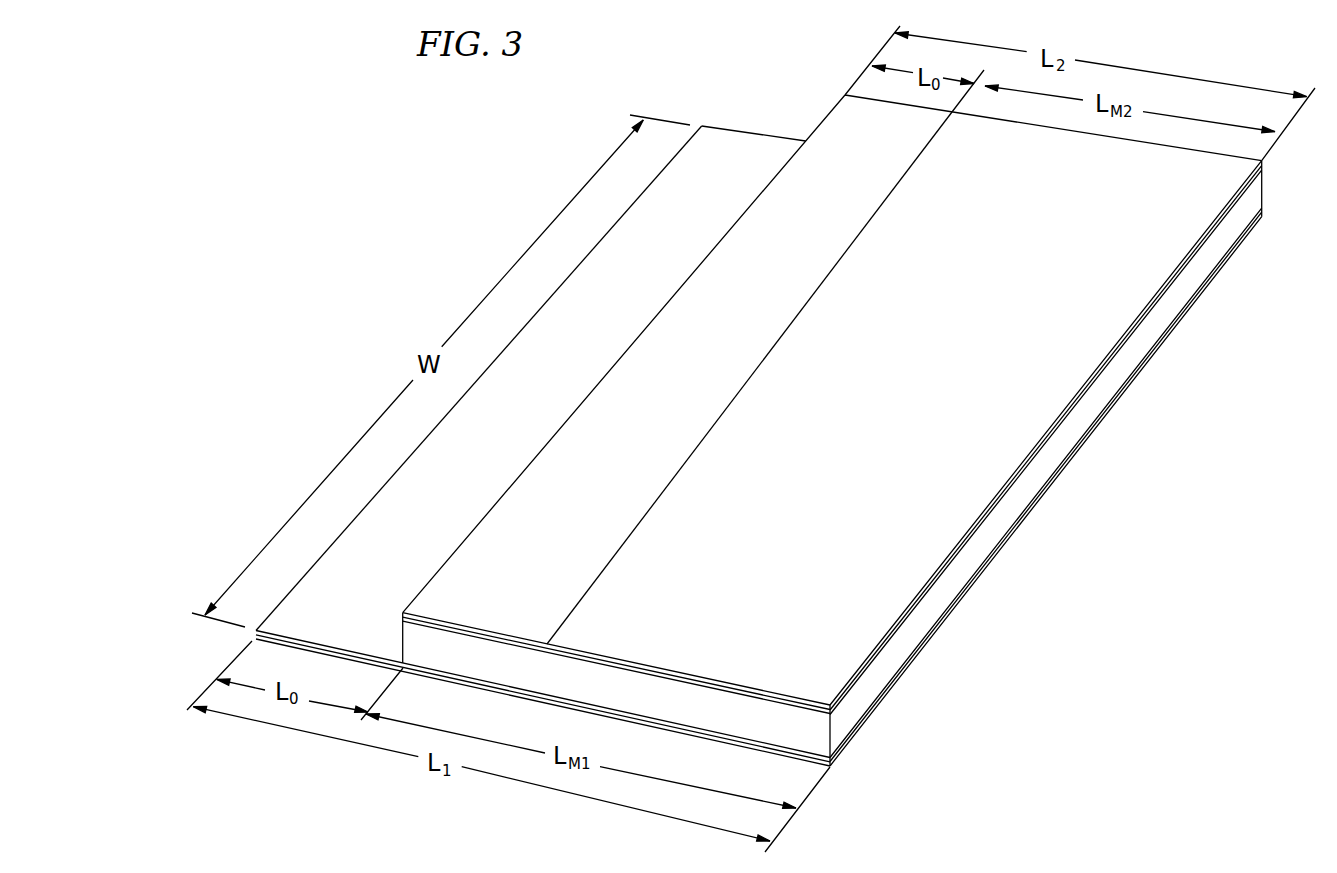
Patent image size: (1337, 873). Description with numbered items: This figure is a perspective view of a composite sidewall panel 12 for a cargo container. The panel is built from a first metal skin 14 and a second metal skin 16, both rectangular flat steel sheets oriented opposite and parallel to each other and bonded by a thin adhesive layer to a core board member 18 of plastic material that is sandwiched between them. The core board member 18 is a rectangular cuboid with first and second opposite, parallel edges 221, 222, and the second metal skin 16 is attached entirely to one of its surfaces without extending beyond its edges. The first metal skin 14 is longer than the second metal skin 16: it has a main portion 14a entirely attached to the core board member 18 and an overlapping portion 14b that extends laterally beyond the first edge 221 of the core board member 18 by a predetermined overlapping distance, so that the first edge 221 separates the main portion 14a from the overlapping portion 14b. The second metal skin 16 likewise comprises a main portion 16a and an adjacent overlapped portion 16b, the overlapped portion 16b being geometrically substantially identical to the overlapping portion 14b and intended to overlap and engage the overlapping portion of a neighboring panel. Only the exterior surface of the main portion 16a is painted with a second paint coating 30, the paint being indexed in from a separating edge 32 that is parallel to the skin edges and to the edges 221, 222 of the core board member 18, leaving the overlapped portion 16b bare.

The sidewall panel 12 is at (523, 162).
The first metal skin 14 is at (720, 123).
The main portion 14a is at (638, 720).
The overlapping portion 14b is at (742, 142).
The second metal skin 16 is at (1115, 293).
The main portion 16a is at (787, 690).
The overlapped portion 16b is at (518, 505).
The core board member 18 is at (808, 732).
The first edge 221 is at (401, 636).
The second edge 222 is at (1262, 187).
The second paint coating 30 is at (1062, 350).
The separating edge 32 is at (756, 366).